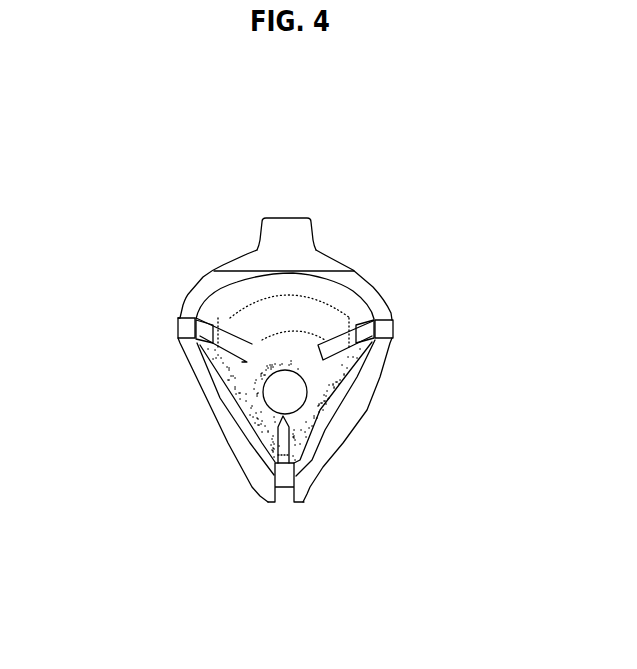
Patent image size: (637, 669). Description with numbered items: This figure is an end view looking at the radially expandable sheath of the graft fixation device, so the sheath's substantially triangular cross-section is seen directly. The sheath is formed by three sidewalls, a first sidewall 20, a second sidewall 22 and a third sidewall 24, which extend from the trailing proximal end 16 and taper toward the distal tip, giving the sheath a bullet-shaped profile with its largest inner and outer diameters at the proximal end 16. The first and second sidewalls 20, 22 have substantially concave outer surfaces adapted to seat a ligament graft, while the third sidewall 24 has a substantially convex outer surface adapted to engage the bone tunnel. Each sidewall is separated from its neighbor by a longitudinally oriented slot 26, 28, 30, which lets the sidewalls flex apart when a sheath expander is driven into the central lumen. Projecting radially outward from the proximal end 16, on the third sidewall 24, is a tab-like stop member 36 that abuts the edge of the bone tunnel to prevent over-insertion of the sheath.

The proximal end 16 is at (185, 300).
The first sidewall 20 is at (345, 425).
The second sidewall 22 is at (222, 422).
The third sidewall 24 is at (362, 290).
The slot 26 is at (362, 337).
The slot 28 is at (210, 335).
The slot 30 is at (282, 478).
The stop member 36 is at (288, 217).